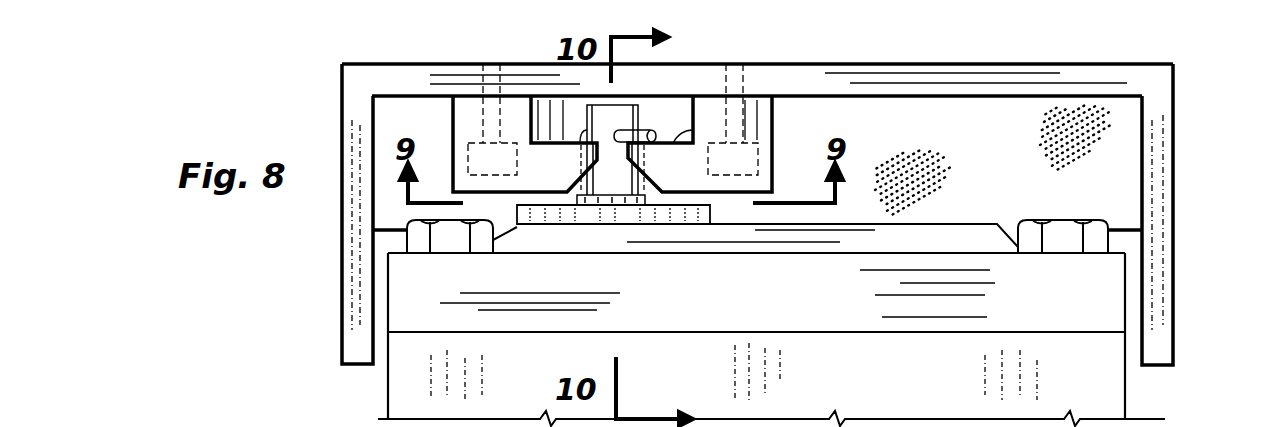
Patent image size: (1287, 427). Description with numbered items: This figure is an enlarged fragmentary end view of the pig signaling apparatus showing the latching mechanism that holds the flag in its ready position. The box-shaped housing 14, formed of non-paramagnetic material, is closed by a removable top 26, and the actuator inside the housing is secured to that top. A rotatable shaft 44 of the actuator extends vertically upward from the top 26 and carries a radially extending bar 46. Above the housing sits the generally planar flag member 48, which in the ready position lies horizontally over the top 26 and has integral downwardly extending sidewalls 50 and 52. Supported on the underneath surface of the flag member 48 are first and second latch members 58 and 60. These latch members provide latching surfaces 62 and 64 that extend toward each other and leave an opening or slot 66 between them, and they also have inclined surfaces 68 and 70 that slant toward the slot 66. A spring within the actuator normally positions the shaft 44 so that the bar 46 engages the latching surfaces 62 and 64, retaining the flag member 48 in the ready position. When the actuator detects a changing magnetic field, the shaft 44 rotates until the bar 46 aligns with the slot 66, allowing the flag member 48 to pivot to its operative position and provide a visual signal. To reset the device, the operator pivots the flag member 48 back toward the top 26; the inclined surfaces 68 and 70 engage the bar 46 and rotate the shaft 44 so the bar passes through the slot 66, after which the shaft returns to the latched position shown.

The housing 14 is at (1108, 400).
The top 26 is at (945, 270).
The rotatable shaft 44 is at (613, 117).
The bar 46 is at (640, 132).
The flag member 48 is at (987, 80).
The sidewall 50 is at (1162, 202).
The sidewall 52 is at (348, 288).
The first latch member 58 is at (760, 112).
The second latch member 60 is at (468, 112).
The latching surface 62 is at (700, 128).
The latching surface 64 is at (557, 142).
The slot 66 is at (611, 162).
The inclined surface 68 is at (648, 183).
The inclined surface 70 is at (575, 198).